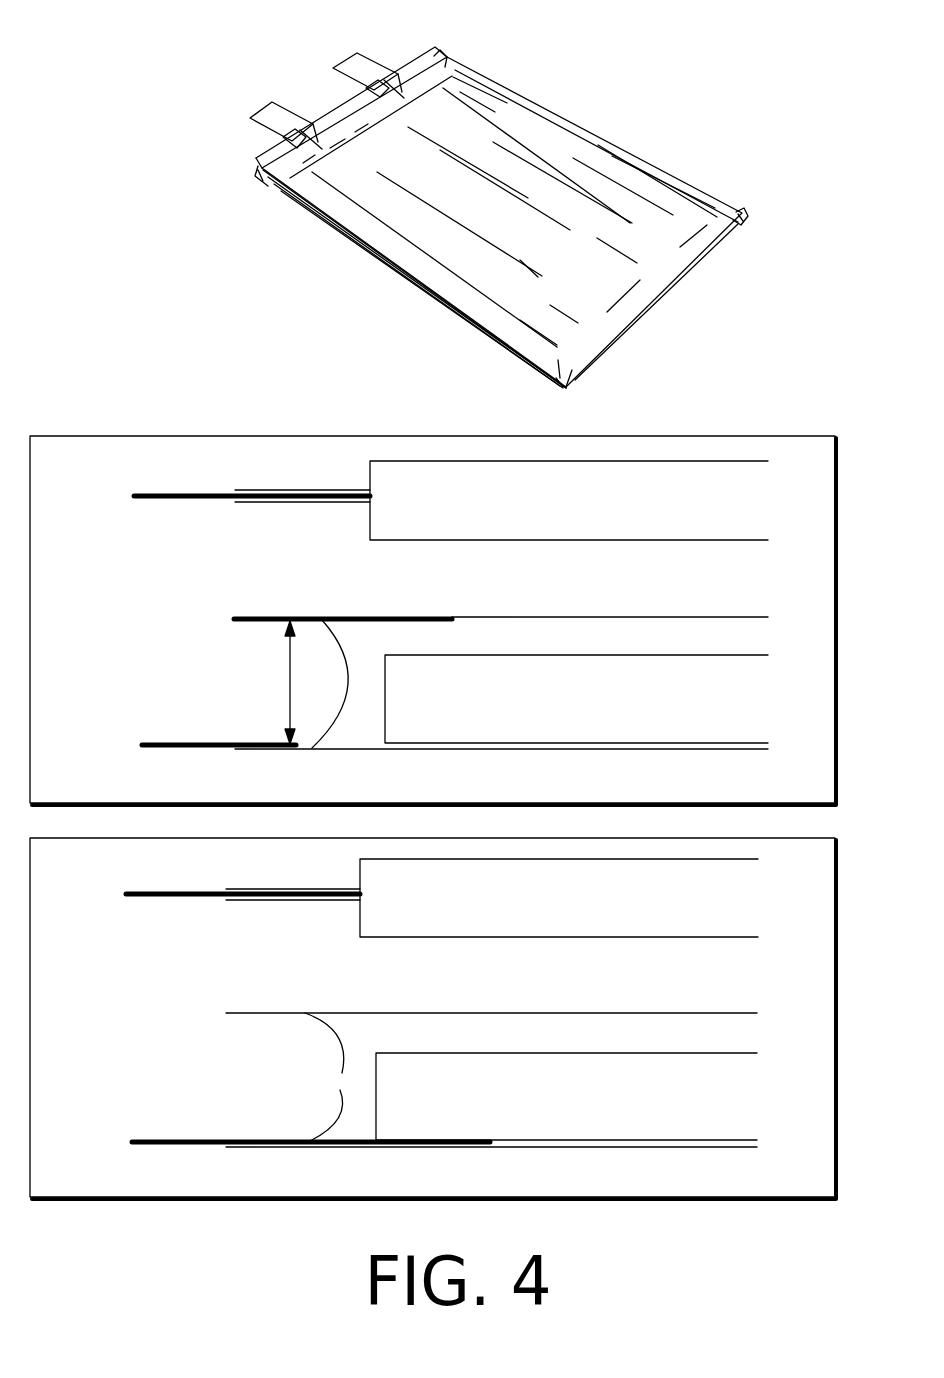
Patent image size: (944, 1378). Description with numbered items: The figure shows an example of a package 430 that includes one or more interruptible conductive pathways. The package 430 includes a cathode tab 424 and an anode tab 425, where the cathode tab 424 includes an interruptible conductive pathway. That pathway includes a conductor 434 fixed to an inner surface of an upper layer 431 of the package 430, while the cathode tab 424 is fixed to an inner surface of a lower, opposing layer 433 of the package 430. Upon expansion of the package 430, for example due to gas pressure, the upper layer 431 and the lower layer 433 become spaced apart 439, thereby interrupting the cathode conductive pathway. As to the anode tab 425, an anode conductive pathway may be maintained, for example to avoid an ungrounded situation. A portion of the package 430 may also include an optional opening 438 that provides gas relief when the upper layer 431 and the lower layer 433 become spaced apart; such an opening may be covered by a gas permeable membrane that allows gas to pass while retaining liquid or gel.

The cathode tab 424 is at (178, 743).
The anode tab 425 is at (150, 1140).
The package 430 is at (480, 217).
The upper layer 431 is at (515, 615).
The lower layer 433 is at (515, 751).
The conductor 434 is at (368, 617).
The opening 438 is at (340, 1090).
The spaced apart 439 is at (288, 676).